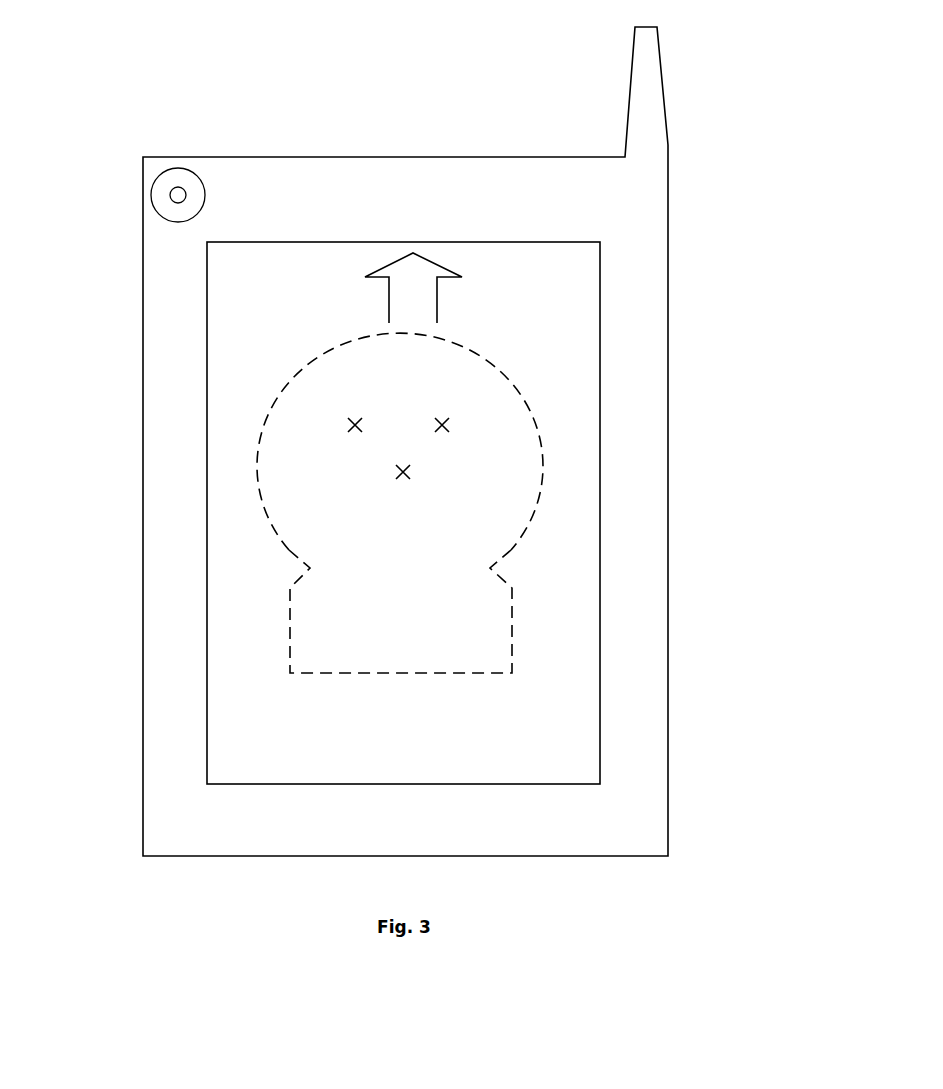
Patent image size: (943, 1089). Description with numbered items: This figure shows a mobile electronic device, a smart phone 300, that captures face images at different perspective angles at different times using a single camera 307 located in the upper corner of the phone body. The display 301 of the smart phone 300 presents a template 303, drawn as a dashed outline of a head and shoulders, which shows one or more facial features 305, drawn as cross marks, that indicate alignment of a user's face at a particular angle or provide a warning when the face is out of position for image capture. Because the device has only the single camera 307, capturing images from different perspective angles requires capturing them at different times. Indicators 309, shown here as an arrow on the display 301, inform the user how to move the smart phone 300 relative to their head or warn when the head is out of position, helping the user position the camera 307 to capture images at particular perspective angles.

The smart phone 300 is at (346, 93).
The display 301 is at (565, 343).
The template 303 is at (547, 493).
The facial features 305 is at (400, 472).
The camera 307 is at (178, 168).
The indicators 309 is at (422, 293).